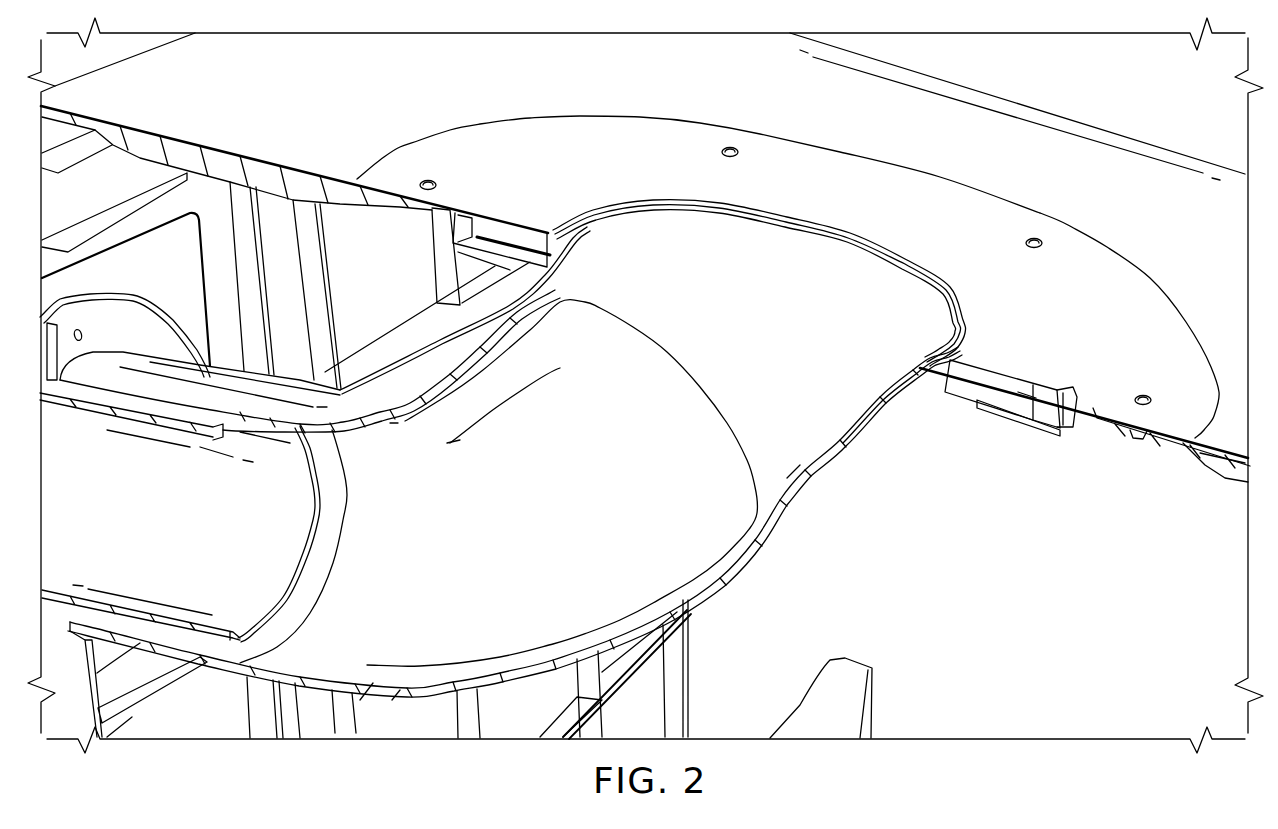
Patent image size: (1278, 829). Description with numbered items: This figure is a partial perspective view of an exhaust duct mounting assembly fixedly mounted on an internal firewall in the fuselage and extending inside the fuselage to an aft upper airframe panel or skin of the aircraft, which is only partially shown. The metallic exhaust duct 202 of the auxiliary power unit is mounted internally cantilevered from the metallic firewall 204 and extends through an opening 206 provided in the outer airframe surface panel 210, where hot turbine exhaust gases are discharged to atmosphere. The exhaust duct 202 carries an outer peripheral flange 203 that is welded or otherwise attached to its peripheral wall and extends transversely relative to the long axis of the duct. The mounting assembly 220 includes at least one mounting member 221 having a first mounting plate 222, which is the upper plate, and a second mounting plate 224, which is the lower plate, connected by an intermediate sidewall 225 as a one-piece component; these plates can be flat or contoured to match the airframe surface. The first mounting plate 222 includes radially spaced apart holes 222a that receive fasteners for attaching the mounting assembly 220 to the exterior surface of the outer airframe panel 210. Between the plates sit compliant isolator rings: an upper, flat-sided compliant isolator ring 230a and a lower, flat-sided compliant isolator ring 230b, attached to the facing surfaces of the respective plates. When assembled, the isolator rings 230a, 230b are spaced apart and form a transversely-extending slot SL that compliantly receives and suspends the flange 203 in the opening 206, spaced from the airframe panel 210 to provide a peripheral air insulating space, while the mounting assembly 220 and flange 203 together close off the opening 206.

The exhaust duct 202 is at (708, 560).
The outer peripheral flange 203 is at (933, 383).
The firewall 204 is at (140, 257).
The opening 206 is at (968, 325).
The outer airframe surface panel 210 is at (1018, 112).
The mounting assembly 220 is at (788, 244).
The mounting member 221 is at (865, 154).
The first mounting plate 222 is at (1115, 270).
The holes 222a is at (732, 146).
The second mounting plate 224 is at (1050, 423).
The intermediate sidewall 225 is at (1070, 405).
The upper compliant isolator ring 230a is at (955, 387).
The lower compliant isolator ring 230b is at (1000, 400).
The slot SL is at (1022, 395).